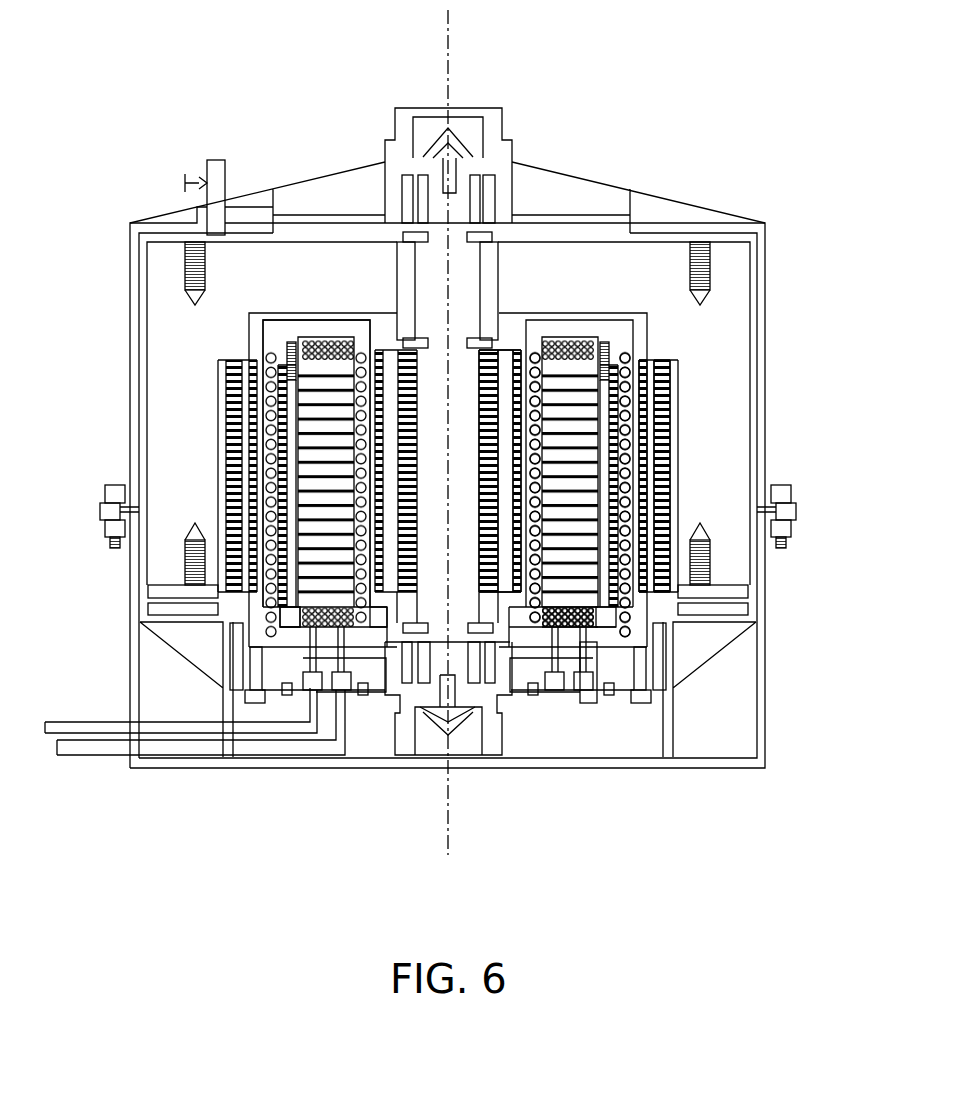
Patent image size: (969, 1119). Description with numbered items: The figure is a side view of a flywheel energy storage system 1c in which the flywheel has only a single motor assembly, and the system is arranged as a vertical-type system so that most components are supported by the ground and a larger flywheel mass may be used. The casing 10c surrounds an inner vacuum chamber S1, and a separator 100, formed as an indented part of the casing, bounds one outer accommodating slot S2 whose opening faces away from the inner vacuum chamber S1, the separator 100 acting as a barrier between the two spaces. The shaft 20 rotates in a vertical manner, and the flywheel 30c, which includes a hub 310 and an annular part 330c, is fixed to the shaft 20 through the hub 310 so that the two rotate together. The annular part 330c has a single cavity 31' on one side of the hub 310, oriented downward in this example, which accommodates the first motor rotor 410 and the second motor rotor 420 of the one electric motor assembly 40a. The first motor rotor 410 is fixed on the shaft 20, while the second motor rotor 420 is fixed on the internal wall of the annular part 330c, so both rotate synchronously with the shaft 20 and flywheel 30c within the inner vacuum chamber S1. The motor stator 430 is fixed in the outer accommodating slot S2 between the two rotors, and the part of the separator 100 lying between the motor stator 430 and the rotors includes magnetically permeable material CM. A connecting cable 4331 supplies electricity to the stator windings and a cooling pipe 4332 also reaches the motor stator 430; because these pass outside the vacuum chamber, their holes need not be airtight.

The flywheel energy storage system 1c is at (178, 34).
The casing 10c is at (762, 358).
The flywheel 30c is at (838, 173).
The hub 310 is at (588, 272).
The annular part 330c is at (716, 330).
The magnetically permeable material CM is at (535, 473).
The separator 100 is at (263, 597).
The inner vacuum chamber S1 is at (379, 636).
The outer accommodating slot S2 is at (295, 636).
The shaft 20 is at (440, 612).
The first motor rotor 410 is at (482, 572).
The motor stator 430 is at (568, 623).
The electric motor assembly 40a is at (628, 591).
The cooling pipe 4332 is at (590, 700).
The connecting cable 4331 is at (92, 728).
The cavity 31' is at (691, 592).
The second motor rotor 420 is at (650, 596).